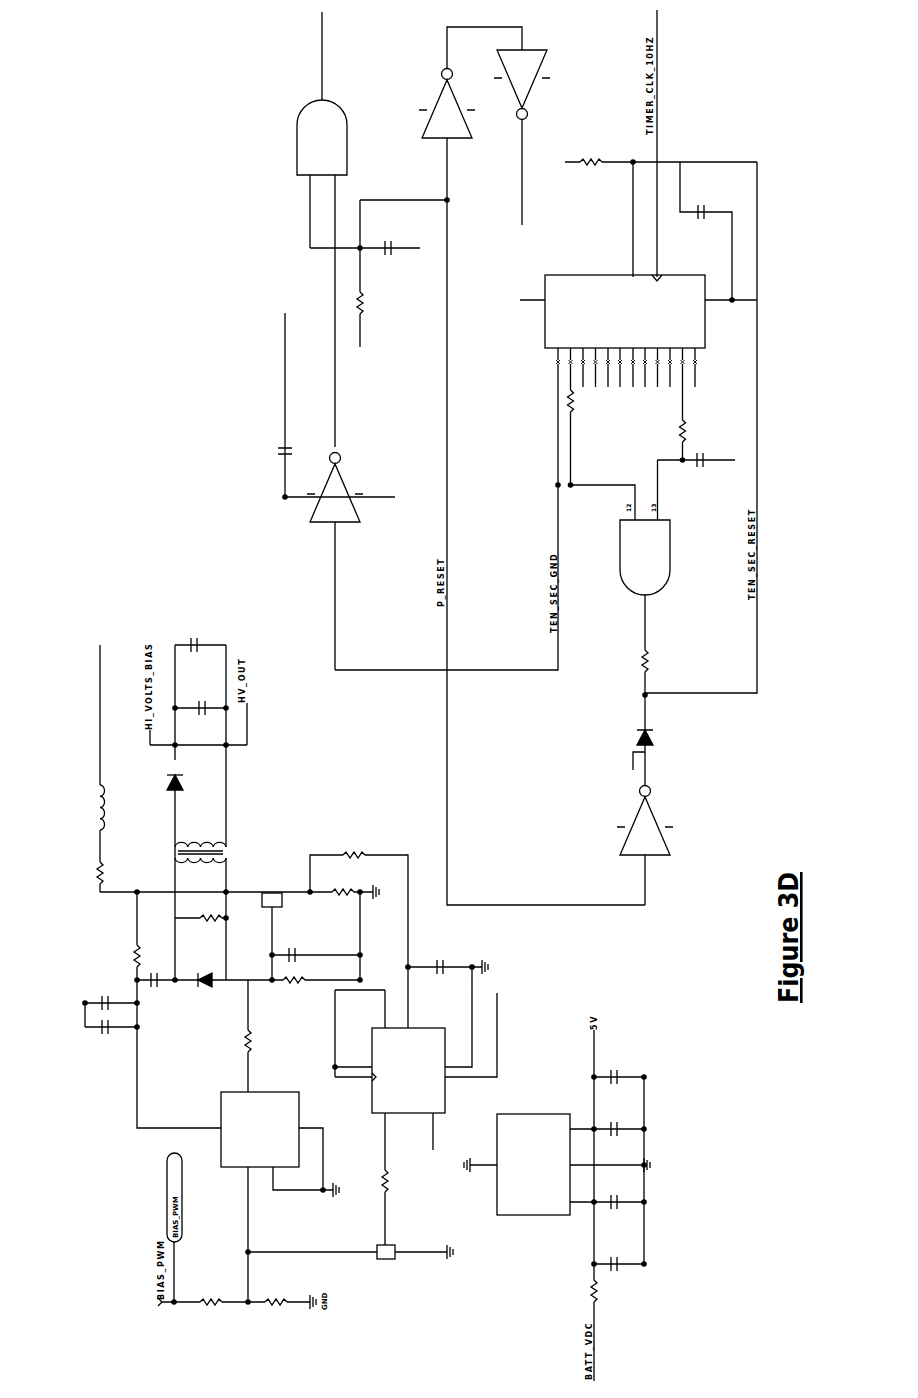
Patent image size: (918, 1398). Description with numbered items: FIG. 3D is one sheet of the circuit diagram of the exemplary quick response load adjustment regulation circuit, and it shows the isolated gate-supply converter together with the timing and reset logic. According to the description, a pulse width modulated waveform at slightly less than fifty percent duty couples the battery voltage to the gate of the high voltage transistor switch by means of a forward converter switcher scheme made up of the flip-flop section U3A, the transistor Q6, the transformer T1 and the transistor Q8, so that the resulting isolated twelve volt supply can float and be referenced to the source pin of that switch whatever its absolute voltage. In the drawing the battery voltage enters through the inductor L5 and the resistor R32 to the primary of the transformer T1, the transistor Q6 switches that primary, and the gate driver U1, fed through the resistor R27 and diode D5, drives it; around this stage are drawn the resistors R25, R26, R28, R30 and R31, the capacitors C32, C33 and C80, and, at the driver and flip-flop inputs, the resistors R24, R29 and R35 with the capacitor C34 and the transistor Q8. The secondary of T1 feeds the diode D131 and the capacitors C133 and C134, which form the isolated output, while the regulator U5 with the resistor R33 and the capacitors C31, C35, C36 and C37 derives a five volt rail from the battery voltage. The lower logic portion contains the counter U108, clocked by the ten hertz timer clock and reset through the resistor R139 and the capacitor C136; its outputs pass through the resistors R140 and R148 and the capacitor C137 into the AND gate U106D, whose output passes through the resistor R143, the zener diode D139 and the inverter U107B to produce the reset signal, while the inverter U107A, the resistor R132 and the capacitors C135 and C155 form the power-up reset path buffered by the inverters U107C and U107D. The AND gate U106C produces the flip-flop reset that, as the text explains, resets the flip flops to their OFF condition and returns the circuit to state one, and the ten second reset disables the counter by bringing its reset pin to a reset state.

The AND gate 74HC08 (FF_RESET) U106C is at (333, 229).
The AND gate 74HC08 (TEN_SEC_RESET) U106D is at (655, 585).
The Schmitt inverter 74HC14 U107A is at (345, 550).
The Schmitt inverter 74HC14 U107B is at (642, 840).
The Schmitt inverter 74HC14 U107C is at (470, 90).
The Schmitt inverter 74HC14 U107D is at (528, 131).
The 12-stage binary counter 74HC4040 U108 is at (613, 313).
The gate driver FAN3100CSX U1 is at (279, 1193).
The forward converter switching integrated circuit section U3A is at (408, 1058).
The voltage regulator MIC2954 U5 is at (564, 1133).
The transformer T1 is at (189, 812).
The inductor 680uH L5 is at (95, 753).
The transistor Q6 is at (270, 912).
The transistor Q8 is at (357, 1270).
The diode 1N4148 D5 is at (173, 1018).
The diode D131 is at (177, 776).
The zener diode RLZ5.6 D139 is at (656, 754).
The resistor 11K R24 is at (210, 1291).
The resistor 113 R25 is at (308, 885).
The resistor 33.2 R26 is at (359, 928).
The resistor R27 is at (258, 1036).
The resistor 2K R28 is at (202, 932).
The resistor 10K R29 is at (275, 1291).
The resistor R30 is at (177, 1010).
The resistor 10K R31 is at (287, 988).
The resistor 1.3 R32 is at (97, 877).
The resistor 10 R33 is at (593, 1291).
The resistor 100 R35 is at (384, 1179).
The resistor 100K R132 is at (375, 308).
The resistor 100K R139 is at (656, 160).
The resistor 1K R140 is at (577, 424).
The resistor 1K R143 is at (651, 690).
The resistor 1K R148 is at (683, 412).
The capacitor 4.7uF C31 is at (619, 1067).
The capacitor 330pF C32 is at (316, 936).
The capacitor 1500pF C33 is at (112, 1046).
The capacitor 1500pF C34 is at (453, 984).
The capacitor 4.7uF C35 is at (619, 1254).
The capacitor 1uF C36 is at (610, 1193).
The capacitor 1uF C37 is at (610, 1118).
The capacitor 1uF C80 is at (111, 997).
The capacitor 1500pF C133 is at (200, 689).
The capacitor 1uF C134 is at (200, 636).
The capacitor 4.7uF C135 is at (372, 247).
The capacitor 0.1uF C136 is at (714, 242).
The capacitor 1500pF C137 is at (699, 459).
The capacitor 0.1uF C155 is at (276, 405).